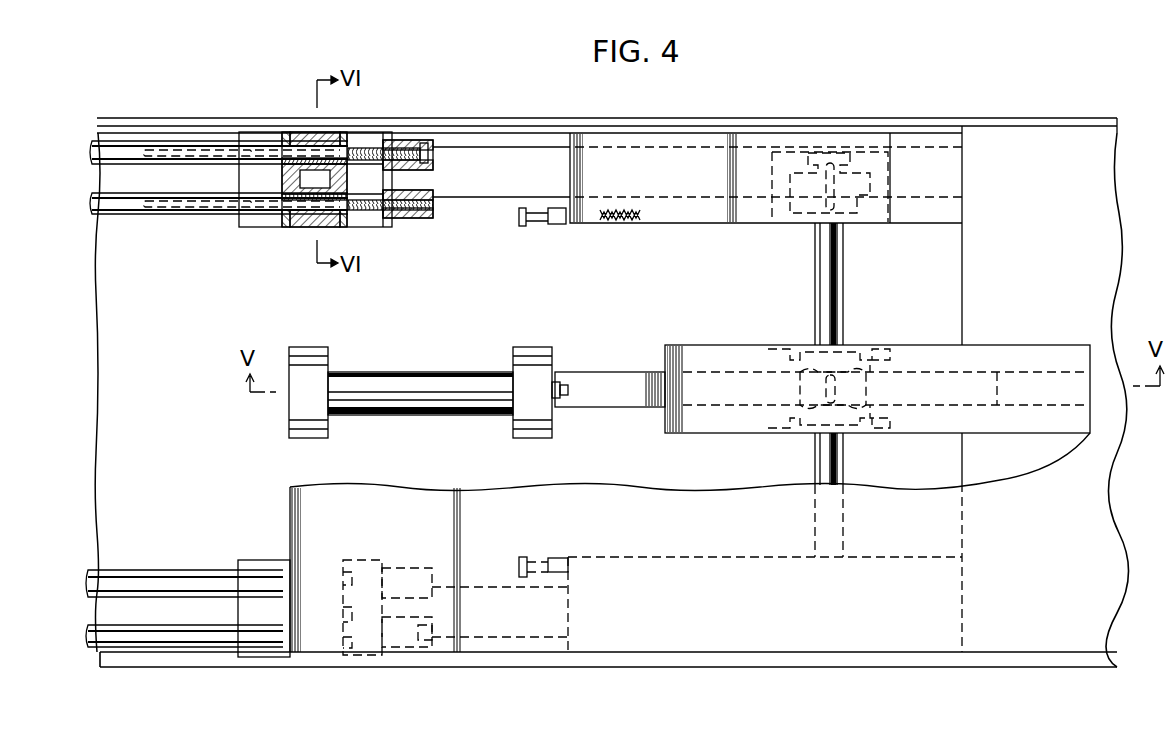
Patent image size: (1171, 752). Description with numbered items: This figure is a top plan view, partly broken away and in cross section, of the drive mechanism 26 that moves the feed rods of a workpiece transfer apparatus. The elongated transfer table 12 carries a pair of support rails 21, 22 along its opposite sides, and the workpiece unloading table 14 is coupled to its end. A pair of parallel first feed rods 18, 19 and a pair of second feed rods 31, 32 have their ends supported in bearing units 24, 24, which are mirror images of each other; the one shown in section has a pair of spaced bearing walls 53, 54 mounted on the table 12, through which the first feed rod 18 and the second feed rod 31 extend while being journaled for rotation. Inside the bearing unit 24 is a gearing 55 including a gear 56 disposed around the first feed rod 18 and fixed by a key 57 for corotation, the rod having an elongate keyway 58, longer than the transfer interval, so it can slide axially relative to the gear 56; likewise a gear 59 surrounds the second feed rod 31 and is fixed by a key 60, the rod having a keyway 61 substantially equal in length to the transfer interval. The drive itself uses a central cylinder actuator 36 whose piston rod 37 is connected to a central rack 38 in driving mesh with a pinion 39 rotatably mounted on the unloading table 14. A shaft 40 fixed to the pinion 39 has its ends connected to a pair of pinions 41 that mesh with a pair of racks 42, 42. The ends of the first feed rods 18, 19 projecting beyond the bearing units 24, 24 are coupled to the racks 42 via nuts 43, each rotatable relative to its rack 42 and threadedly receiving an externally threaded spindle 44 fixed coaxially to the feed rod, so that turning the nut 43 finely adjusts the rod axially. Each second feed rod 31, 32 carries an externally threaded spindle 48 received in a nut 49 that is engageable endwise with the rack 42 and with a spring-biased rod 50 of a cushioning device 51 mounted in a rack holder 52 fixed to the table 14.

The transfer table 12 is at (98, 420).
The workpiece unloading table 14 is at (1020, 150).
The first feed rod 18 is at (121, 150).
The first feed rod 19 is at (168, 650).
The support rail 21 is at (536, 118).
The support rail 22 is at (542, 665).
The bearing unit 24 is at (282, 228).
The drive mechanism 26 is at (912, 157).
The second feed rod 31 is at (120, 212).
The second feed rod 32 is at (166, 580).
The cylinder actuator 36 is at (416, 372).
The piston rod 37 is at (564, 400).
The central rack 38 is at (610, 372).
The pinion 39 is at (855, 365).
The shaft 40 is at (838, 268).
The pinion 41 is at (855, 165).
The rack 42 is at (472, 192).
The nut 43 is at (406, 140).
The externally threaded spindle 44 is at (370, 148).
The externally threaded spindle 48 is at (396, 218).
The nut 49 is at (438, 211).
The spring-biased rod 50 is at (538, 224).
The cushioning device 51 is at (564, 224).
The rack holder 52 is at (693, 222).
The bearing wall 53 is at (282, 178).
The bearing wall 54 is at (347, 172).
The gearing 55 is at (310, 132).
The gear 56 is at (288, 133).
The key 57 is at (330, 133).
The keyway 58 is at (208, 150).
The gear 59 is at (298, 227).
The key 60 is at (352, 227).
The keyway 61 is at (202, 210).